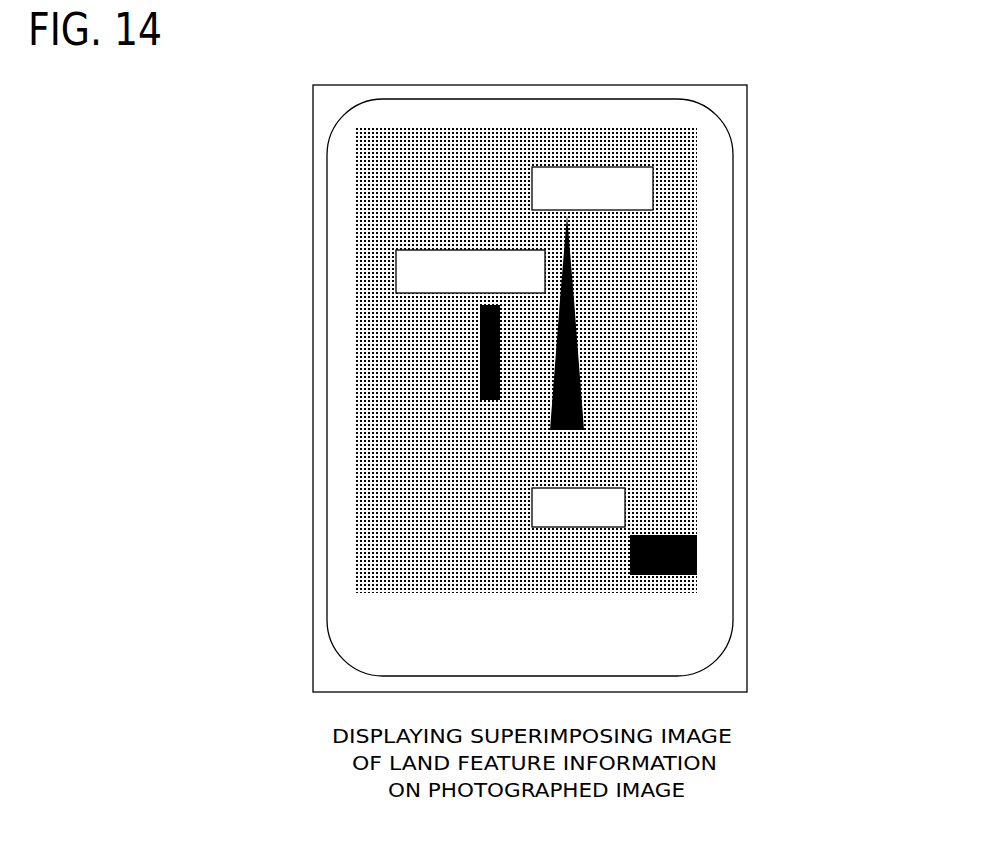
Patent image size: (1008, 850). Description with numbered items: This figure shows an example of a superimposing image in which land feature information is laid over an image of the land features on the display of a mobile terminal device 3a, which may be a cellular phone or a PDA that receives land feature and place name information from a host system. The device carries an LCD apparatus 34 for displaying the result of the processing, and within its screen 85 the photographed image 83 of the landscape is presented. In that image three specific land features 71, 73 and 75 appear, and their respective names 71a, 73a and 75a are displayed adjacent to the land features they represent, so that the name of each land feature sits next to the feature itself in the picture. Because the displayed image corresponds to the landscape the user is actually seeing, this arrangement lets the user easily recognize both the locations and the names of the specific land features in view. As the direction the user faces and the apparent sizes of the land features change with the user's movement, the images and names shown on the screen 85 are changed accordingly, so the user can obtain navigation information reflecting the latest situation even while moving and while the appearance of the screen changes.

The mobile terminal device 3a is at (826, 343).
The screen 85 is at (530, 369).
The LCD apparatus 34 is at (748, 464).
The photographed image 83 is at (706, 408).
The land feature 71 is at (472, 330).
The name 71a is at (396, 276).
The land feature 73 is at (567, 290).
The name 73a is at (653, 185).
The land feature 75 is at (702, 540).
The name 75a is at (625, 504).